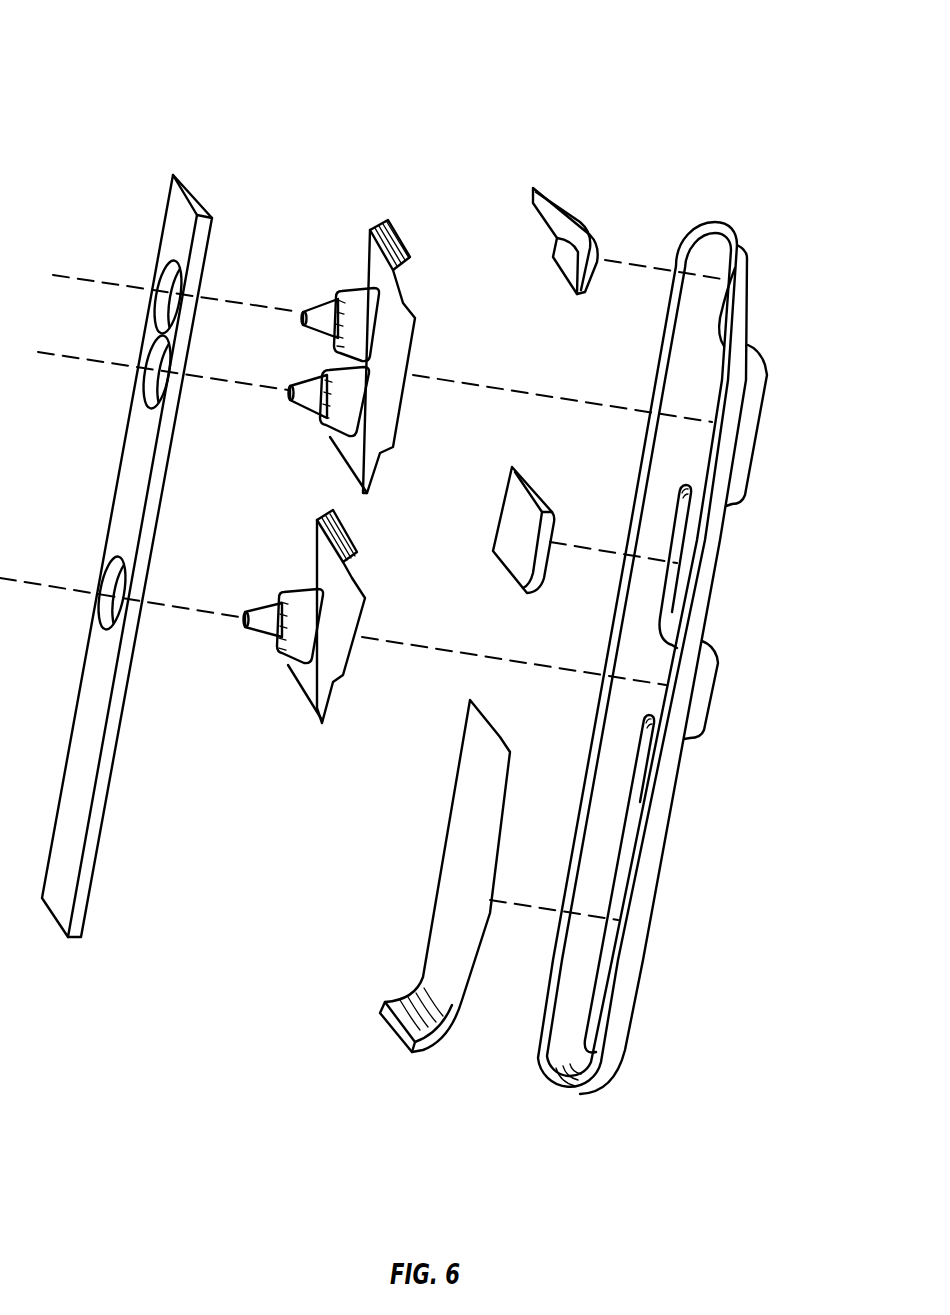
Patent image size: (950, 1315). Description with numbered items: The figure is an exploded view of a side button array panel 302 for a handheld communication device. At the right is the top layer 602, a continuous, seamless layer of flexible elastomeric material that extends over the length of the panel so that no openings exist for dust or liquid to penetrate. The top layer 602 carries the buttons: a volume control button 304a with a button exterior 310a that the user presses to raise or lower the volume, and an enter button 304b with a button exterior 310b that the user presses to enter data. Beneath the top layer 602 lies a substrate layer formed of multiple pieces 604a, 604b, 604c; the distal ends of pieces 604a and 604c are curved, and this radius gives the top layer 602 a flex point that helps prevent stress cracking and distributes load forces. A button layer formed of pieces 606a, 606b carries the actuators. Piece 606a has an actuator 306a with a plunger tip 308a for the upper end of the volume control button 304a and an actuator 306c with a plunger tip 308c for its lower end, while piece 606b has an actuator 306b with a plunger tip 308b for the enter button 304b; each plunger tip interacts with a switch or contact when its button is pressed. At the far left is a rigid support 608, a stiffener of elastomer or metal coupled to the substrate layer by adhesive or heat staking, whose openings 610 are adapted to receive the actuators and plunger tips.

The side button array panel 302 is at (212, 46).
The top layer 602 is at (722, 222).
The substrate layer piece 604a is at (557, 214).
The substrate layer piece 604b is at (530, 484).
The substrate layer piece 604c is at (492, 717).
The button layer piece 606a is at (403, 210).
The button layer piece 606b is at (282, 692).
The rigid support 608 is at (198, 203).
The opening 610 is at (166, 268).
The actuator 306a is at (357, 290).
The actuator 306b is at (302, 591).
The actuator 306c is at (330, 438).
The plunger tip 308a is at (310, 306).
The plunger tip 308b is at (259, 605).
The plunger tip 308c is at (305, 408).
The volume control button 304a is at (774, 418).
The enter button 304b is at (729, 677).
The button exterior 310a is at (754, 463).
The button exterior 310b is at (711, 709).